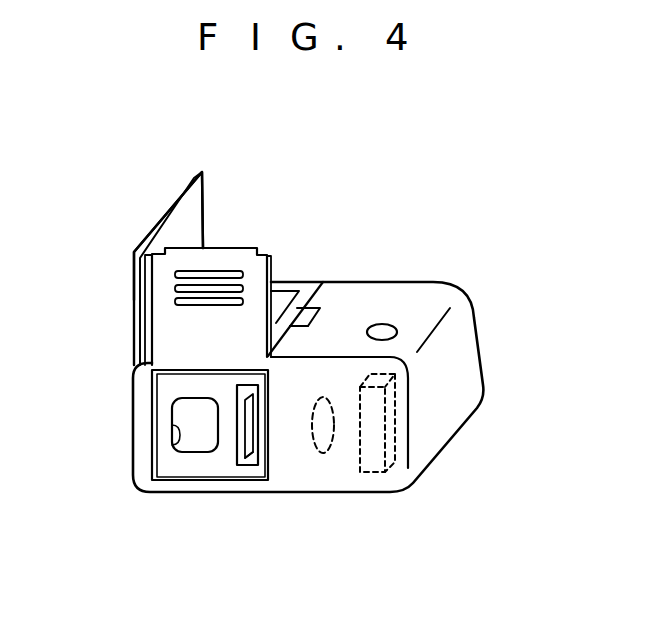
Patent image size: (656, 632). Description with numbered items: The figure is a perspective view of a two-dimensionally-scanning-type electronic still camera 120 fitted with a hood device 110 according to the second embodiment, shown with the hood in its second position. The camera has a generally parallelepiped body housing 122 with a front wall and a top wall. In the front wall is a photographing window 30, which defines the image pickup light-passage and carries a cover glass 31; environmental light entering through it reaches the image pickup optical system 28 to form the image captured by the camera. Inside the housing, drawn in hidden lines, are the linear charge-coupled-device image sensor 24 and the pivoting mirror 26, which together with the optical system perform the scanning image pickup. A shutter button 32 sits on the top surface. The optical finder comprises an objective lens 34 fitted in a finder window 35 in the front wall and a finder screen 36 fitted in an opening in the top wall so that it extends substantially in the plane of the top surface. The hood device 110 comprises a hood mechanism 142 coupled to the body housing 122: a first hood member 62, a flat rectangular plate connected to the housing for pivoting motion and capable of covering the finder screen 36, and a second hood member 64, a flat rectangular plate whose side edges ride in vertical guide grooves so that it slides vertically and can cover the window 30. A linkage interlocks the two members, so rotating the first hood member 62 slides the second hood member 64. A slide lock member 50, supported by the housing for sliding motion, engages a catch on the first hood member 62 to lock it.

The electronic still camera 120 is at (518, 247).
The body housing 122 is at (357, 297).
The hood device 110 is at (287, 168).
The hood mechanism 142 is at (108, 210).
The first hood member 62 is at (190, 218).
The second hood member 64 is at (172, 340).
The finder screen 36 is at (278, 310).
The slide lock member 50 is at (314, 310).
The shutter button 32 is at (387, 324).
The finder window 35 is at (173, 428).
The objective lens 34 is at (188, 440).
The photographing window 30 is at (237, 445).
The cover glass 31 is at (245, 452).
The pivoting mirror 26 is at (251, 456).
The image pickup optical system 28 is at (325, 447).
The linear charge-coupled-device image sensor 24 is at (372, 460).